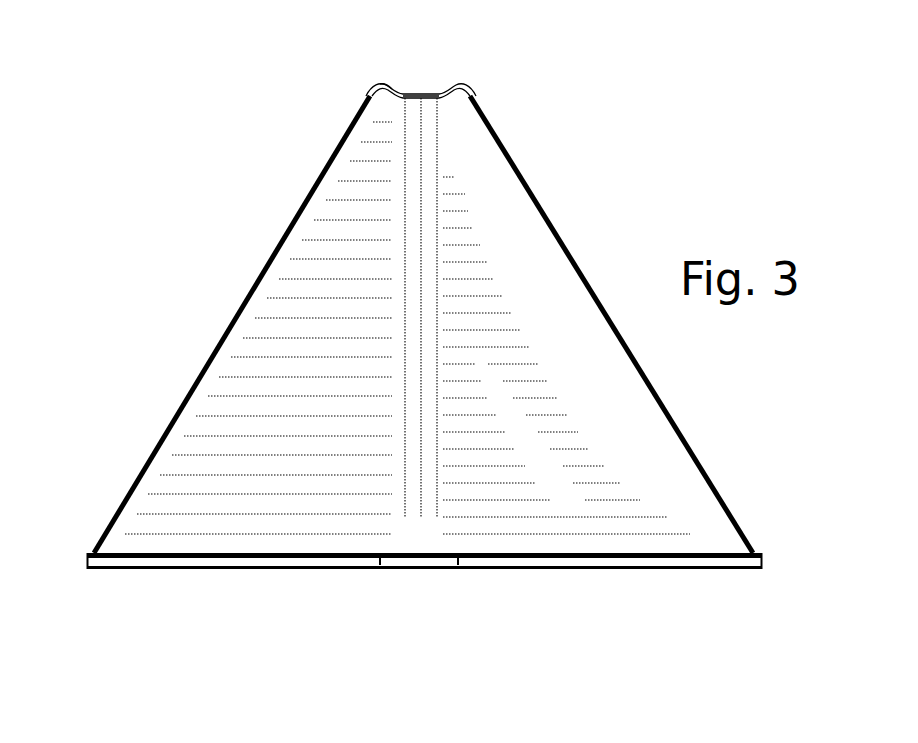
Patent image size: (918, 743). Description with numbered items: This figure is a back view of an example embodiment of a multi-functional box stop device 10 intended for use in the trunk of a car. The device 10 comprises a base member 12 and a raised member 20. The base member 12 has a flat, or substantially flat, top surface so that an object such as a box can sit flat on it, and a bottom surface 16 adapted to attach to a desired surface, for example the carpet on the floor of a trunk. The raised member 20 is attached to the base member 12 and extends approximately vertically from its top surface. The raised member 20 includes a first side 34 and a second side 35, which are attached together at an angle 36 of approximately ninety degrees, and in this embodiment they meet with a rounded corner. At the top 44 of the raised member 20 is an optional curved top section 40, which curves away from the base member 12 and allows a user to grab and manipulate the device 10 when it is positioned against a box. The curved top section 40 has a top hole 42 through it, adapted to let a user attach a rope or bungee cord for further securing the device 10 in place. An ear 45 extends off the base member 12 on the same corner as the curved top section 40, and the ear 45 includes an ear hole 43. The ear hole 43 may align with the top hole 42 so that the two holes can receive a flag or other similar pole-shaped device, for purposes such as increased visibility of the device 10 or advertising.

The multi-functional box stop device 10 is at (252, 160).
The base member 12 is at (88, 554).
The bottom surface 16 is at (296, 598).
The raised member 20 is at (622, 216).
The first side 34 is at (625, 424).
The second side 35 is at (248, 332).
The angle 36 is at (378, 391).
The curved top section 40 is at (447, 85).
The top hole 42 is at (403, 62).
The ear hole 43 is at (433, 585).
The top 44 is at (414, 40).
The ear 45 is at (390, 568).